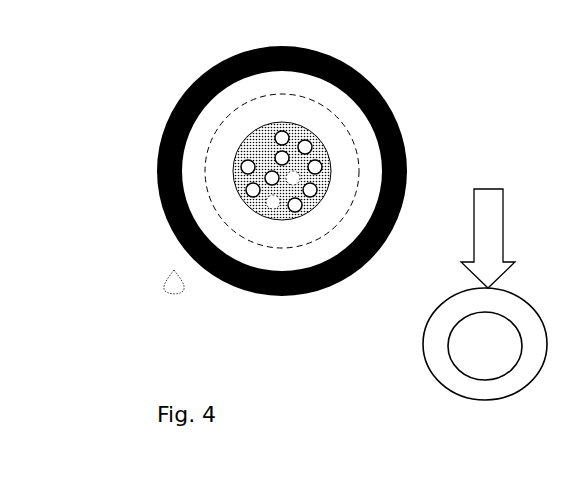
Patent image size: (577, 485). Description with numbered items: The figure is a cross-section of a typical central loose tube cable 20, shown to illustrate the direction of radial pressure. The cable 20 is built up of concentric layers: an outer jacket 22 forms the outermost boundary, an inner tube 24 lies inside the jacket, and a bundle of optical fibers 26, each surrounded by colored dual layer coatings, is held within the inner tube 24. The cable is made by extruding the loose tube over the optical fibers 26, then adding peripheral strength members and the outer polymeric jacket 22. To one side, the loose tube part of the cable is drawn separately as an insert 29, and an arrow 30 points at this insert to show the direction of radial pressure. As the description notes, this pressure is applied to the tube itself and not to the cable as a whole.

The central loose tube cable 20 is at (160, 93).
The outer jacket 22 is at (382, 98).
The inner tube 24 is at (335, 163).
The optical fibers 26 is at (318, 187).
The insert 29 is at (437, 367).
The arrow 30 is at (480, 233).